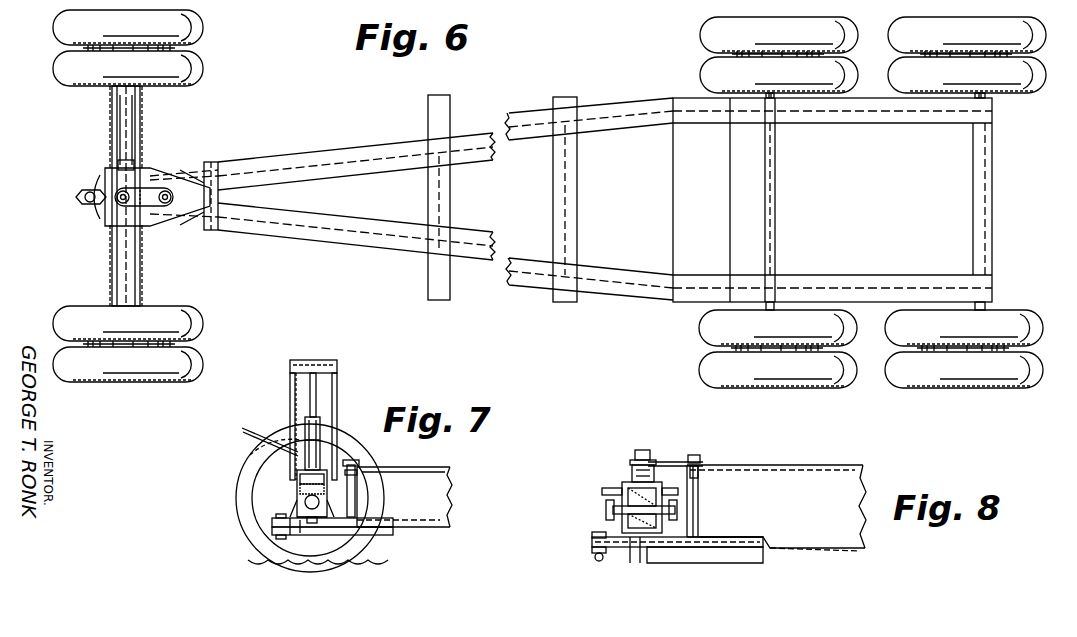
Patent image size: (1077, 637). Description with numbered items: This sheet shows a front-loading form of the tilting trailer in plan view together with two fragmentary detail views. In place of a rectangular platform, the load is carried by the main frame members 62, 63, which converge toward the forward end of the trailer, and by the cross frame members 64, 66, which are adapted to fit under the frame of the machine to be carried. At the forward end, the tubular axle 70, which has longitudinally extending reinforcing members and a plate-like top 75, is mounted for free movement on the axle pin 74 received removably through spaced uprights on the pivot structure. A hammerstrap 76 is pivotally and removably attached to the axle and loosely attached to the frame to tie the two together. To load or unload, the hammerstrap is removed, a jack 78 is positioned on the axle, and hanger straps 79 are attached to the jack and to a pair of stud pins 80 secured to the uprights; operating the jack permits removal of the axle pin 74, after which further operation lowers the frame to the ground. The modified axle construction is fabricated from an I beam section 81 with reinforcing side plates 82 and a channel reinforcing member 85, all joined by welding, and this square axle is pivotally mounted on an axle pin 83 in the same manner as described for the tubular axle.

In FIG. 6, the main frame member 62 is at (340, 242).
In FIG. 6, the main frame member 63 is at (358, 151).
In FIG. 6, the cross frame member 64 is at (450, 105).
In FIG. 6, the cross frame member 66 is at (576, 102).
In FIG. 6, the tubular axle 70 is at (112, 252).
In FIG. 6, the axle pin 74 is at (110, 203).
In FIG. 6, the plate-like top 75 is at (112, 138).
In FIG. 6, the hammerstrap 76 is at (165, 191).
In FIG. 7, the jack 78 is at (320, 420).
In FIG. 7, the hanger straps 79 is at (290, 402).
In FIG. 6, the stud pins 80 is at (88, 192).
In FIG. 7, the stud pins 80 is at (297, 476).
In FIG. 8, the I beam section 81 is at (660, 484).
In FIG. 8, the reinforcing side plates 82 is at (620, 490).
In FIG. 8, the axle pin 83 is at (608, 509).
In FIG. 8, the channel reinforcing member 85 is at (622, 482).